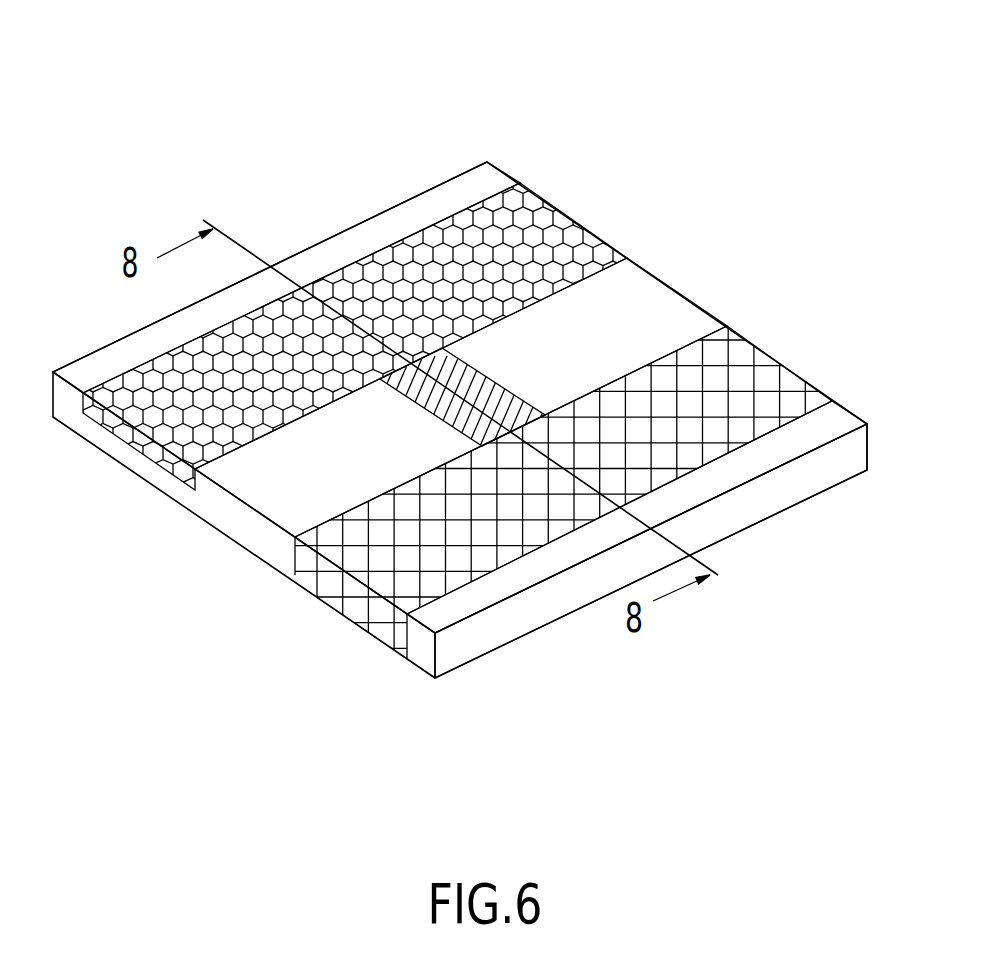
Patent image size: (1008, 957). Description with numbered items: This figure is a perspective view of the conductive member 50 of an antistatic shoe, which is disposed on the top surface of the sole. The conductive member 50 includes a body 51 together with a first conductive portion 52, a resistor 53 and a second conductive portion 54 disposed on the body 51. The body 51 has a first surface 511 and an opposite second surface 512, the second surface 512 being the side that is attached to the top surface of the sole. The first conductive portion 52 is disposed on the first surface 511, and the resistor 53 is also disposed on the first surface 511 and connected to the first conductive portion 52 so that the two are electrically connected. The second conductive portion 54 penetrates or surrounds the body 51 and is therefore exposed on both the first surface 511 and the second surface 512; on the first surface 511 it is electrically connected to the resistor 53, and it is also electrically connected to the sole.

The conductive member 50 is at (543, 127).
The body 51 is at (383, 227).
The first surface 511 is at (623, 313).
The second surface 512 is at (500, 649).
The first conductive portion 52 is at (560, 253).
The resistor 53 is at (460, 403).
The second conductive portion 54 is at (723, 385).